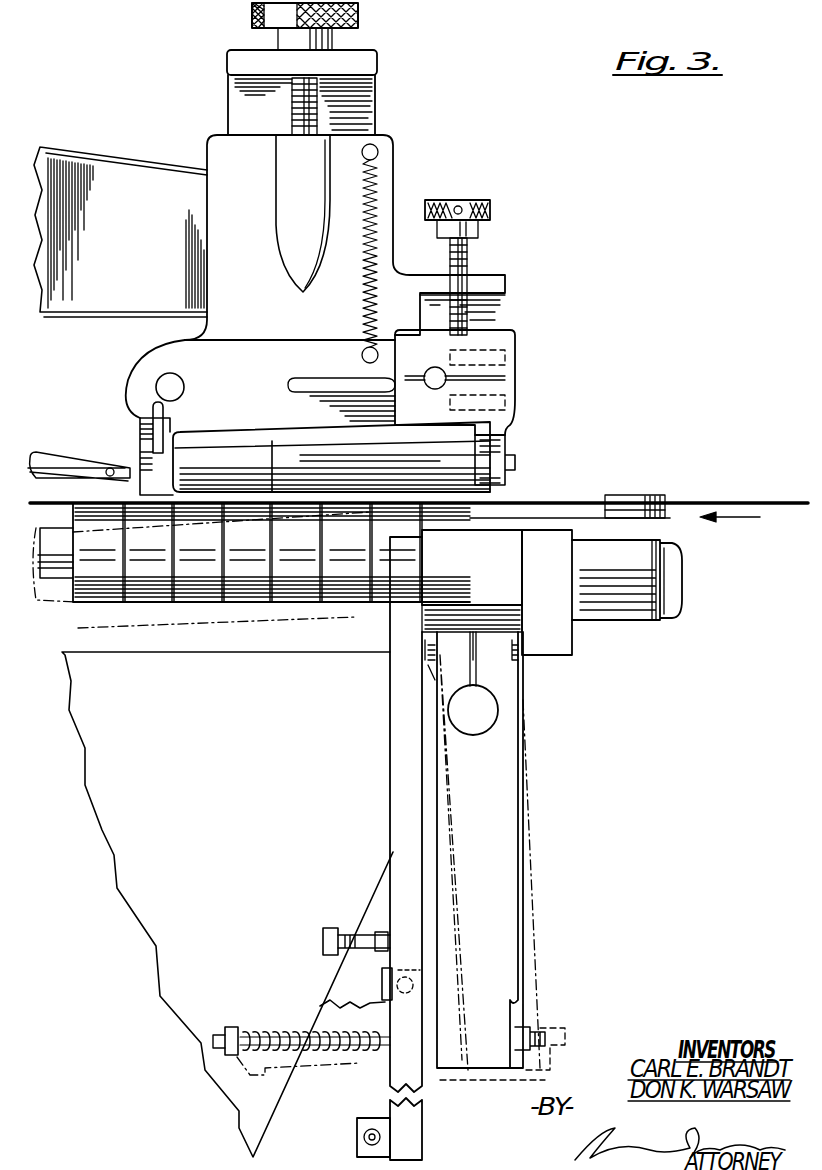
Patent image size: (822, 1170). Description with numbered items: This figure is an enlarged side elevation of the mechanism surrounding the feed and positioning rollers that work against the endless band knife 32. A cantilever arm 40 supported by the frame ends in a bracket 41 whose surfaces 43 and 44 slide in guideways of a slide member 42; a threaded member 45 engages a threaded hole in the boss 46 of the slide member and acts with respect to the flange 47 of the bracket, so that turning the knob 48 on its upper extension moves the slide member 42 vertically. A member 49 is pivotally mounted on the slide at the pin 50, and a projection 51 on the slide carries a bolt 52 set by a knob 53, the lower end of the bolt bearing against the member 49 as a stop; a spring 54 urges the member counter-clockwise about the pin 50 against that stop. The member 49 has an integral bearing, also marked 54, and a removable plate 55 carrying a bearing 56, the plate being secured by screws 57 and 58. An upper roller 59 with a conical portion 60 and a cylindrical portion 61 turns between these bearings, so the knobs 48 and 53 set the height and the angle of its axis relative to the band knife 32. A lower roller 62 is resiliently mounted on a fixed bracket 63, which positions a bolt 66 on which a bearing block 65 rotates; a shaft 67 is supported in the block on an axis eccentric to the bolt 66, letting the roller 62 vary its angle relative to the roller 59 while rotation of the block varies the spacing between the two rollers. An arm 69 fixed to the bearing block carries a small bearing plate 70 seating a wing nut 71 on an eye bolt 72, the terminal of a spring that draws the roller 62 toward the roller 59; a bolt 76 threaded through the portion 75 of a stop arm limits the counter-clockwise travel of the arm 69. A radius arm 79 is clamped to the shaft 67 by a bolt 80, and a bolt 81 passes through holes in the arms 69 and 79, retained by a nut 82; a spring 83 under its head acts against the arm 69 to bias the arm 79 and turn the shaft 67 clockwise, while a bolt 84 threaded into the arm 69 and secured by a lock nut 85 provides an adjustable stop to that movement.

The endless band knife 32 is at (672, 502).
The cantilever arm 40 is at (120, 150).
The bracket 41 is at (385, 103).
The slide member 42 is at (398, 180).
The surface of bracket 43 is at (382, 125).
The surface of bracket 44 is at (228, 108).
The threaded member 45 is at (292, 114).
The boss 46 is at (300, 200).
The flange 47 is at (370, 62).
The knob 48 is at (252, 12).
The member 49 is at (276, 354).
The pin 50 is at (160, 381).
The projection 51 is at (503, 278).
The bolt 52 is at (466, 255).
The knob 53 is at (490, 206).
The spring 54 is at (380, 212).
The removable plate 55 is at (517, 380).
The bearing 56 is at (507, 455).
The screw 57 is at (512, 352).
The screw 58 is at (512, 400).
The roller 59 is at (262, 436).
The conical portion 60 is at (226, 470).
The cylindrical portion 61 is at (381, 467).
The lower roller 62 is at (276, 600).
The fixed bracket 63 is at (575, 640).
The bearing block 65 is at (472, 581).
The bolt 66 is at (684, 580).
The shaft 67 is at (470, 712).
The arm 69 is at (396, 814).
The bearing plate 70 is at (366, 1118).
The wing nut 71 is at (364, 1135).
The eye bolt 72 is at (368, 1142).
The portion of stop arm 75 is at (384, 990).
The bolt 76 is at (397, 982).
The radius arm 79 is at (500, 936).
The bolt 80 is at (430, 658).
The bolt 81 is at (232, 1027).
The nut 82 is at (525, 1035).
The spring 83 is at (274, 1030).
The bolt 84 is at (327, 933).
The lock nut 85 is at (384, 930).